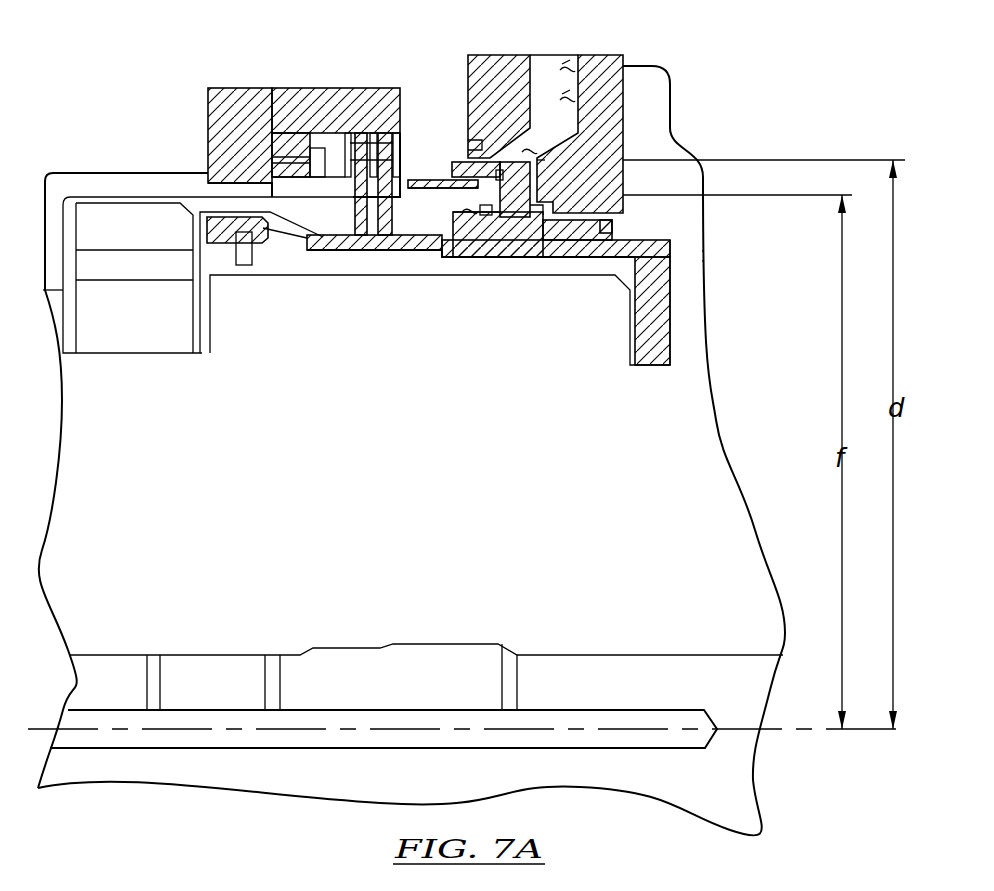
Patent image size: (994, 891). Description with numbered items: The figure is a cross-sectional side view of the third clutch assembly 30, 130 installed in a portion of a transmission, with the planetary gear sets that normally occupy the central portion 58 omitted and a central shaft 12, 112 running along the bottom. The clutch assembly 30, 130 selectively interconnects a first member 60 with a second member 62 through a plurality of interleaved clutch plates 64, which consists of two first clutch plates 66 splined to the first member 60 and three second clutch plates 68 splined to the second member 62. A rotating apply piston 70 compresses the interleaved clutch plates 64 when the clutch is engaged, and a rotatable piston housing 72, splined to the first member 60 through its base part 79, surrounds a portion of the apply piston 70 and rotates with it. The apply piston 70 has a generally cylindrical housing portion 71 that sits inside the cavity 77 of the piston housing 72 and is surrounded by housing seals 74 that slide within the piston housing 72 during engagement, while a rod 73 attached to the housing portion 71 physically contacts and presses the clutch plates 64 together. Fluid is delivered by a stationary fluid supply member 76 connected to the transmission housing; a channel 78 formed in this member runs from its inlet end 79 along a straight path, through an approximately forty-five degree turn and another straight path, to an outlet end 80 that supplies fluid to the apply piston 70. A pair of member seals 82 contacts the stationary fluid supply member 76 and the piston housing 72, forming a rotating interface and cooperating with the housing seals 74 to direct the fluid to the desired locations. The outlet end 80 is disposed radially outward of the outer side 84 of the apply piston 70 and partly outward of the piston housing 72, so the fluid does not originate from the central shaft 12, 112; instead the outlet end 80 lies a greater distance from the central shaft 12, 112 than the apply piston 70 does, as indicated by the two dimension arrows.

The central shaft 12 is at (668, 735).
The central shaft 112 is at (783, 782).
The third clutch assembly 30 is at (768, 84).
The third clutch assembly 130 is at (819, 39).
The central portion 58 is at (160, 467).
The first member 60 is at (672, 272).
The second member 62 is at (234, 107).
The interleaved clutch plates 64 is at (404, 161).
The first clutch plates 66 is at (358, 218).
The second clutch plates 68 is at (352, 158).
The apply piston 70 is at (432, 188).
The housing portion 71 is at (500, 215).
The piston housing 72 is at (515, 245).
The rod 73 is at (410, 195).
The housing seals 74 is at (483, 162).
The stationary fluid supply member 76 is at (607, 147).
The cavity 77 is at (462, 205).
The channel 78 is at (615, 62).
The base part 79 is at (570, 62).
The outlet end 80 is at (540, 130).
The member seals 82 is at (478, 127).
The outer side 84 is at (418, 181).